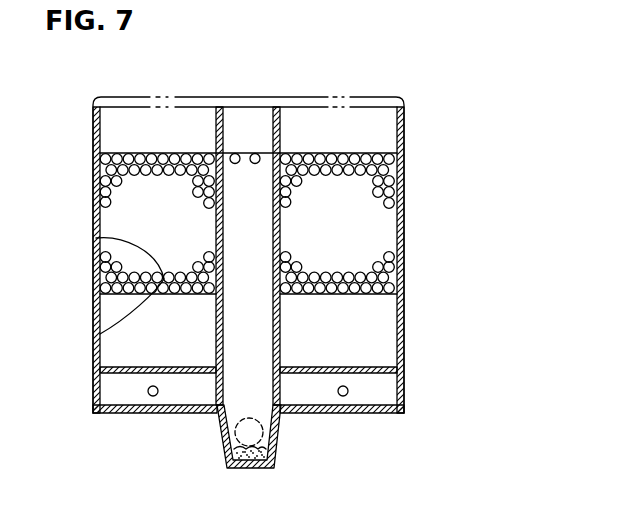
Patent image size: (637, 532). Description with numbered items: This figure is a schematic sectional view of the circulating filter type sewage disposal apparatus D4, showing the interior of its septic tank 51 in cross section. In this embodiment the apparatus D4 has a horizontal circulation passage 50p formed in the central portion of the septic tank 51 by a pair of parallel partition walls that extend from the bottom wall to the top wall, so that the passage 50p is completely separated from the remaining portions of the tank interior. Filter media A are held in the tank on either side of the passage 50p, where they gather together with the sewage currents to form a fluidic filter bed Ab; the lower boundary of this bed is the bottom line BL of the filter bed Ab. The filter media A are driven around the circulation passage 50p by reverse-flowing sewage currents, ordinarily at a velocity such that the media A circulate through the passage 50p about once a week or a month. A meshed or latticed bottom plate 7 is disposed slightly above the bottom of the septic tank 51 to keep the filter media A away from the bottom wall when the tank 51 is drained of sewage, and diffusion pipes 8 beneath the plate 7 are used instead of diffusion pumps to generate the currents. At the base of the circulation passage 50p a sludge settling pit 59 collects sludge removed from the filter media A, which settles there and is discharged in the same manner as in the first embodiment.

The circulating filter type sewage disposal apparatus D4 is at (425, 103).
The septic tank 51 is at (404, 238).
The circulation passage 50p is at (252, 222).
The sludge settling pit 59 is at (255, 468).
The bottom plate 7 is at (350, 366).
The diffusion pipe 8 is at (153, 397).
The filter bed Ab is at (121, 296).
The bottom line of the filter bed BL is at (100, 334).
The filter media A is at (235, 153).